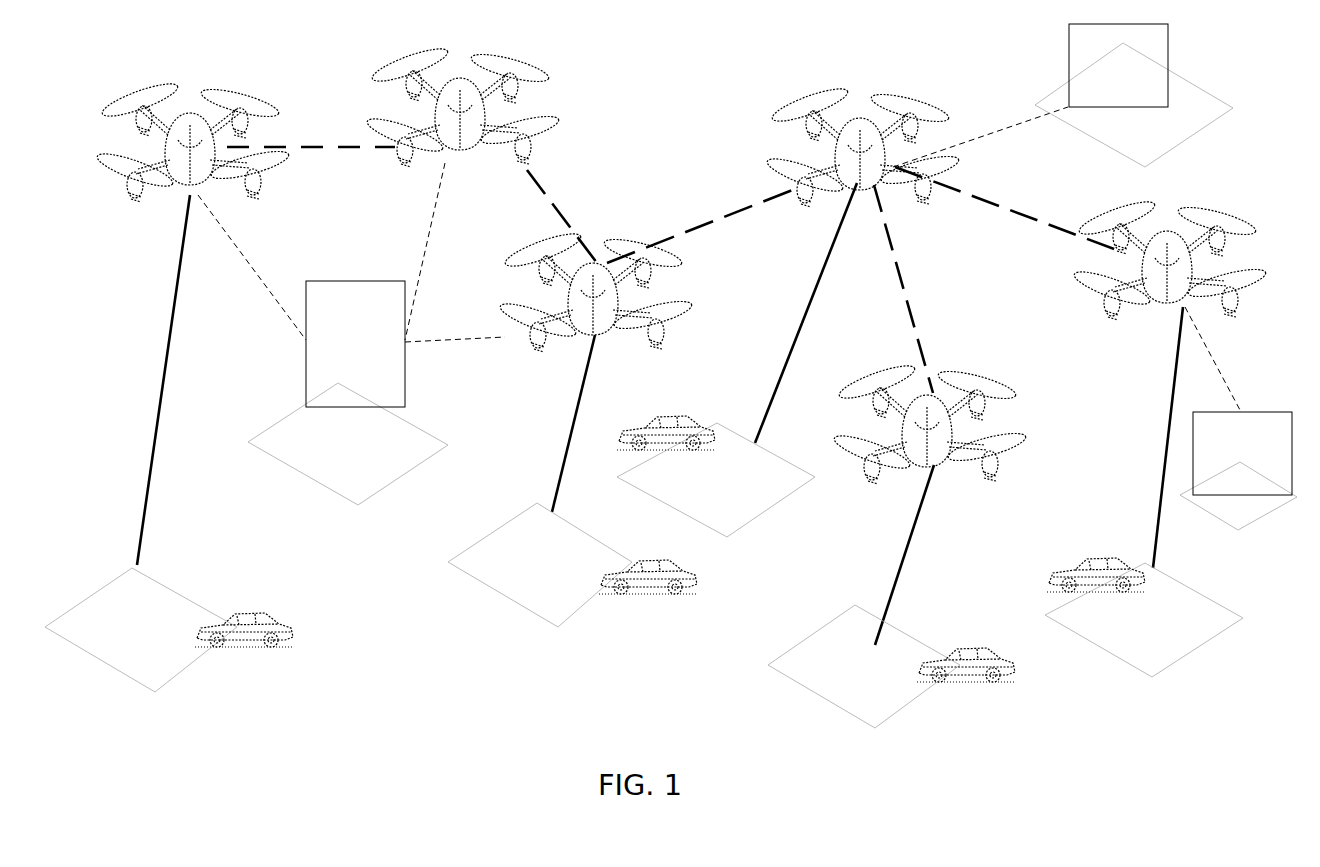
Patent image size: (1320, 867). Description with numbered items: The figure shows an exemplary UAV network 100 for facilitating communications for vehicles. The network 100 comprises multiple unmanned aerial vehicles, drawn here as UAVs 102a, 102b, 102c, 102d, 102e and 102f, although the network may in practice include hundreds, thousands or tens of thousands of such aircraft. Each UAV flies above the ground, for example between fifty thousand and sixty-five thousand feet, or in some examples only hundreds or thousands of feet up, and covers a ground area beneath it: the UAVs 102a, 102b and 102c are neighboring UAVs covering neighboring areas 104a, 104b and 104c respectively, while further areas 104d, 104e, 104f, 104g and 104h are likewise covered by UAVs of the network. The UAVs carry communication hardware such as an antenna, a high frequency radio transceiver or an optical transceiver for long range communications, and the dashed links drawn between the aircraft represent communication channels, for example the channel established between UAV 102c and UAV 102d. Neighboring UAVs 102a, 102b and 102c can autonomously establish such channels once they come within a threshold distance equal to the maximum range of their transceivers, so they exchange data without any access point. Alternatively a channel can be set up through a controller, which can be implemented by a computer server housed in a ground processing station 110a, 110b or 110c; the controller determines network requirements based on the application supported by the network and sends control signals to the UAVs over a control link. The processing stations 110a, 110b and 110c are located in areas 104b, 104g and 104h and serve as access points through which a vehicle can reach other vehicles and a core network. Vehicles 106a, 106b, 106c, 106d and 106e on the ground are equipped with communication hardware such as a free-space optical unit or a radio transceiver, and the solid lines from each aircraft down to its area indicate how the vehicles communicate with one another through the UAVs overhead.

The UAV network 100 is at (1141, 735).
The UAV 102a is at (187, 110).
The UAV 102b is at (552, 137).
The UAV 102c is at (685, 302).
The UAV 102d is at (925, 112).
The UAV 102e is at (992, 382).
The UAV 102f is at (1242, 222).
The area 104a is at (141, 630).
The area 104b is at (348, 444).
The area 104c is at (540, 565).
The area 104d is at (716, 480).
The area 104e is at (864, 666).
The area 104f is at (1144, 620).
The area 104g is at (1238, 495).
The area 104h is at (1134, 105).
The vehicle 106a is at (278, 612).
The vehicle 106b is at (697, 590).
The vehicle 106c is at (676, 414).
The vehicle 106d is at (952, 657).
The vehicle 106e is at (1077, 562).
The ground processing station 110a is at (355, 281).
The ground processing station 110b is at (1243, 412).
The ground processing station 110c is at (1168, 63).